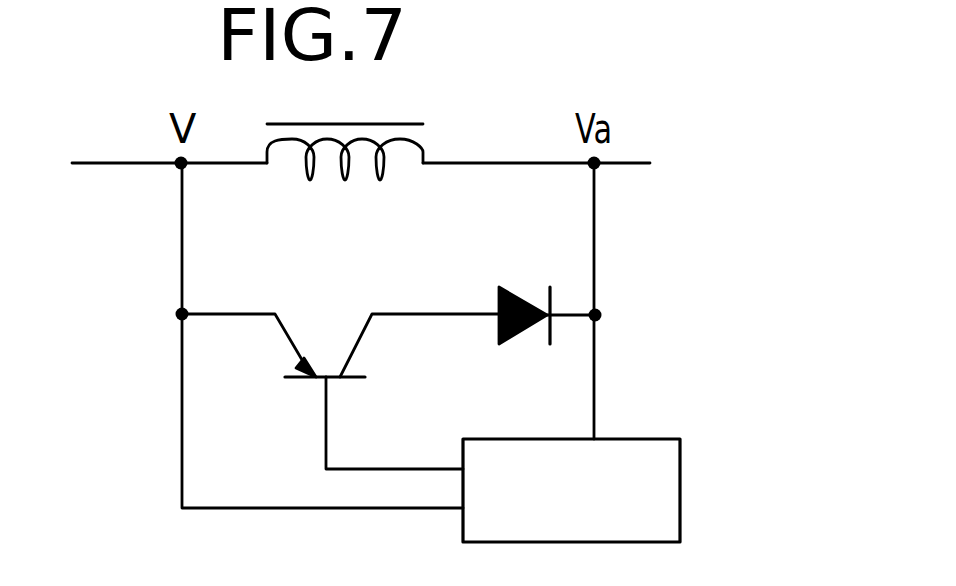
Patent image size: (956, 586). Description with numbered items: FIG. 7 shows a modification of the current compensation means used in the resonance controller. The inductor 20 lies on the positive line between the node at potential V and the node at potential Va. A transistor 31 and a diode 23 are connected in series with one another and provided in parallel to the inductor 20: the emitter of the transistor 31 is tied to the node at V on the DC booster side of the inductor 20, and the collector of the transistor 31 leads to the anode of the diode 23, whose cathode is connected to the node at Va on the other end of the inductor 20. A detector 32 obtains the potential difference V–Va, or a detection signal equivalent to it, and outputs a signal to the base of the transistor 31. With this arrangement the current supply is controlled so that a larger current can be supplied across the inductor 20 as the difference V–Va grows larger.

The inductor 20 is at (422, 150).
The diode 23 is at (522, 297).
The transistor 31 is at (358, 345).
The detector 32 is at (637, 438).